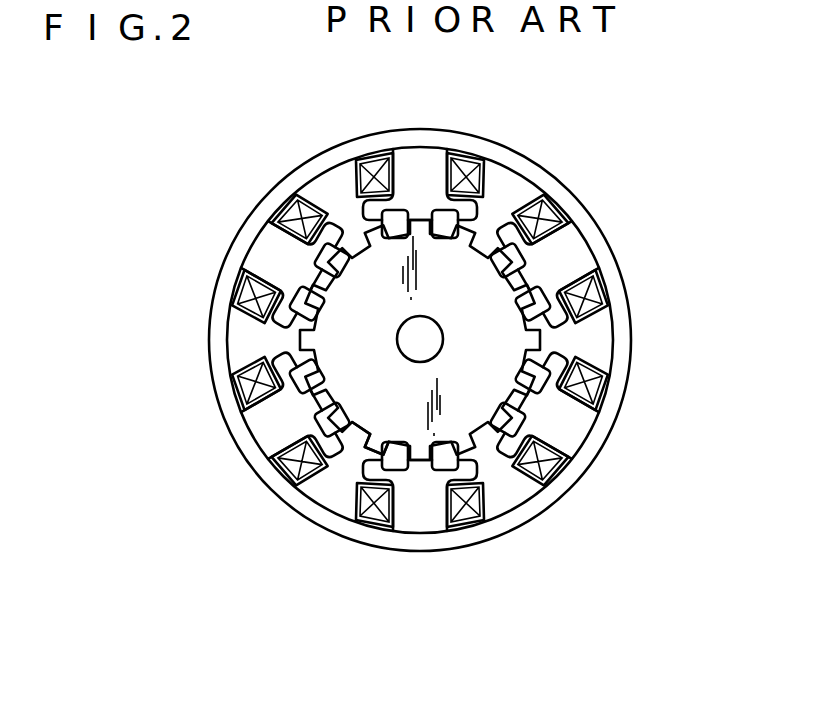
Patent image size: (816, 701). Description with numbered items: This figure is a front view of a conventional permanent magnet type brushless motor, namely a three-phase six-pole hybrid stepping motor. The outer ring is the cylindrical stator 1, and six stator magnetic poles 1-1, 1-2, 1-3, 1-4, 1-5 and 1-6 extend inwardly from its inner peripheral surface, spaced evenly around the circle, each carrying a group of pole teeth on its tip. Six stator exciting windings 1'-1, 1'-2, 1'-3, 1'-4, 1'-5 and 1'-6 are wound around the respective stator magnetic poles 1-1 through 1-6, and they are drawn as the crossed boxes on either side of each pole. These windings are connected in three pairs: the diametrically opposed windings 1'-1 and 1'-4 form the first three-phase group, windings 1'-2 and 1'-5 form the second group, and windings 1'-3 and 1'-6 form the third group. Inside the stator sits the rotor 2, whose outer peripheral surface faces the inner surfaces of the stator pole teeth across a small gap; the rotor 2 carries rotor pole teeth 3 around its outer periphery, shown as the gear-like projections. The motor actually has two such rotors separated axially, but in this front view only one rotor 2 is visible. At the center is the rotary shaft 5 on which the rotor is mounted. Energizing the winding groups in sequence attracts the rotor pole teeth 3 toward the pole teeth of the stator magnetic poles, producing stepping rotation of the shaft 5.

The stator 1 is at (420, 340).
The stator magnetic pole 1-1 is at (421, 165).
The stator magnetic pole 1-2 is at (568, 253).
The stator magnetic pole 1-3 is at (568, 428).
The stator magnetic pole 1-4 is at (422, 510).
The stator magnetic pole 1-5 is at (272, 427).
The stator magnetic pole 1-6 is at (273, 255).
The stator exciting winding 1'-1 is at (458, 139).
The stator exciting winding 1'-2 is at (620, 264).
The stator exciting winding 1'-3 is at (589, 453).
The stator exciting winding 1'-4 is at (409, 556).
The stator exciting winding 1'-5 is at (226, 422).
The stator exciting winding 1'-6 is at (262, 218).
The rotor 2 is at (476, 400).
The rotor pole teeth 3 is at (370, 440).
The rotary shaft 5 is at (397, 331).